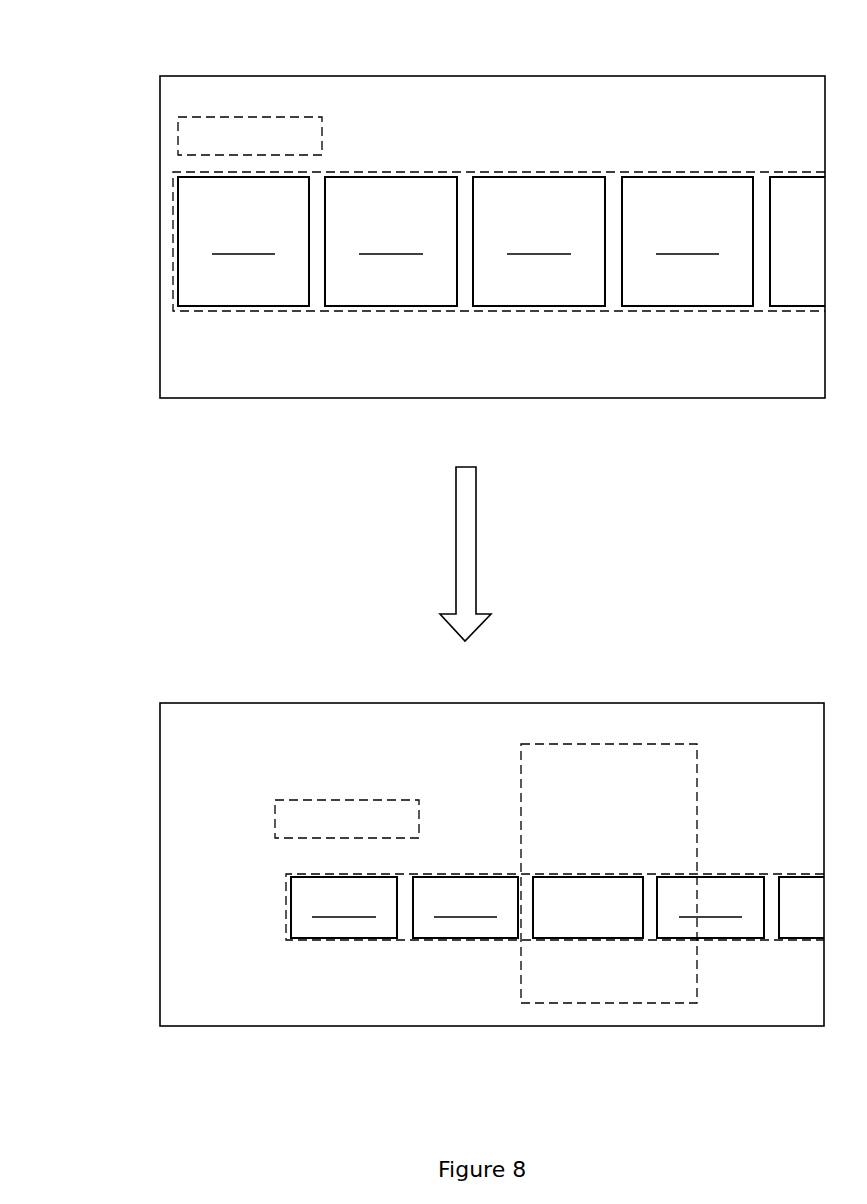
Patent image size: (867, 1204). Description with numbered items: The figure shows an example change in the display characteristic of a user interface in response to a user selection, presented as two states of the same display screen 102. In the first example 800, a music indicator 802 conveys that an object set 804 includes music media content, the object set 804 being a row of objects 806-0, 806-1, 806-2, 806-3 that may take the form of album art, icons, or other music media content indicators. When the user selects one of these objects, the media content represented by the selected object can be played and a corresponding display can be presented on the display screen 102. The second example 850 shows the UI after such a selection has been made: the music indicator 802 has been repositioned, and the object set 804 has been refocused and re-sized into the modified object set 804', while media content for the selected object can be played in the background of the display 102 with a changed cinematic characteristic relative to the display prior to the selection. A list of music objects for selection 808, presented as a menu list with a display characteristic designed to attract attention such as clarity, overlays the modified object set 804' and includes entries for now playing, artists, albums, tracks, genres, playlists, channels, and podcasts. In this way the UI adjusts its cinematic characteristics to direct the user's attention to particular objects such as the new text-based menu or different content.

The example display 800 is at (425, 205).
The example display 850 is at (150, 660).
The display screen 102 is at (217, 389).
The music indicator 802 is at (308, 132).
The object set 804 is at (499, 262).
The modified object set 804' is at (527, 924).
The object 806-0 is at (287, 557).
The object 806-1 is at (421, 557).
The object 806-2 is at (558, 557).
The object 806-3 is at (693, 557).
The list of music objects for selection 808 is at (678, 832).